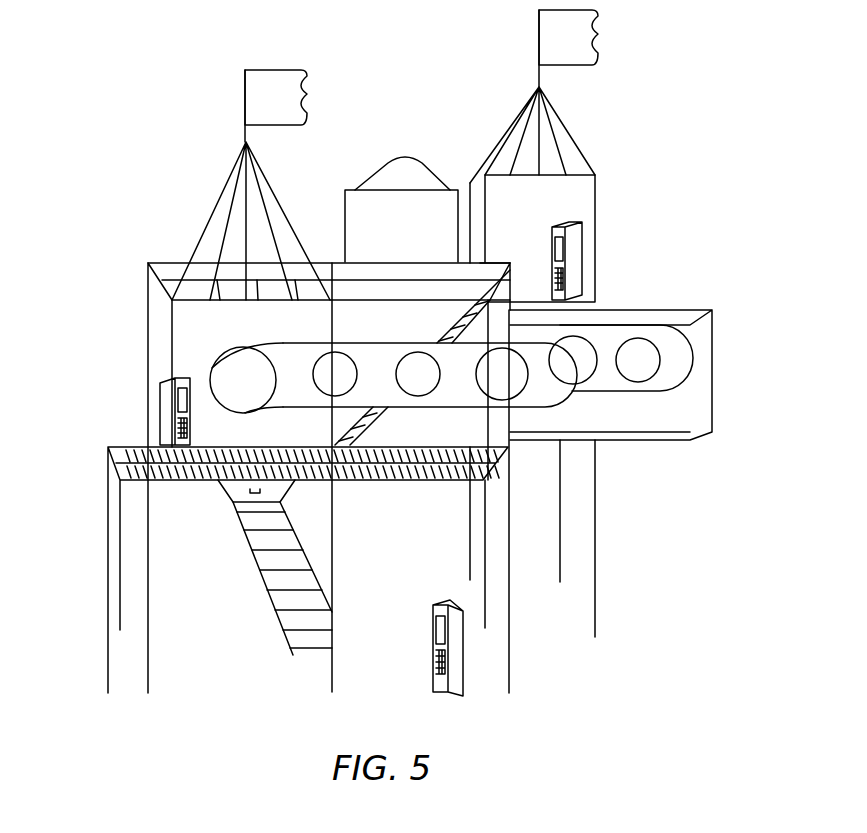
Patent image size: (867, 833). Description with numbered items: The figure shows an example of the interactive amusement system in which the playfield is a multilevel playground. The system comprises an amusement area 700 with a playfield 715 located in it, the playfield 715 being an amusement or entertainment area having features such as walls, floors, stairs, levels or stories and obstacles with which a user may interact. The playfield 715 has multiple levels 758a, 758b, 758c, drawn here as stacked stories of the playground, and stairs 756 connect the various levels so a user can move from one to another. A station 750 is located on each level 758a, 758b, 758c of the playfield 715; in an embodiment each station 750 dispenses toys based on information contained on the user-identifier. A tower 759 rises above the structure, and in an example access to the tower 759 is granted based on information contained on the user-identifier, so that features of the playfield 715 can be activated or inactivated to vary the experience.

The amusement area 700 is at (114, 68).
The playfield 715 is at (716, 401).
The station 750 is at (158, 400).
The stairs 756 is at (378, 421).
The level 758a is at (216, 553).
The level 758b is at (224, 338).
The level 758c is at (569, 160).
The tower 759 is at (578, 202).